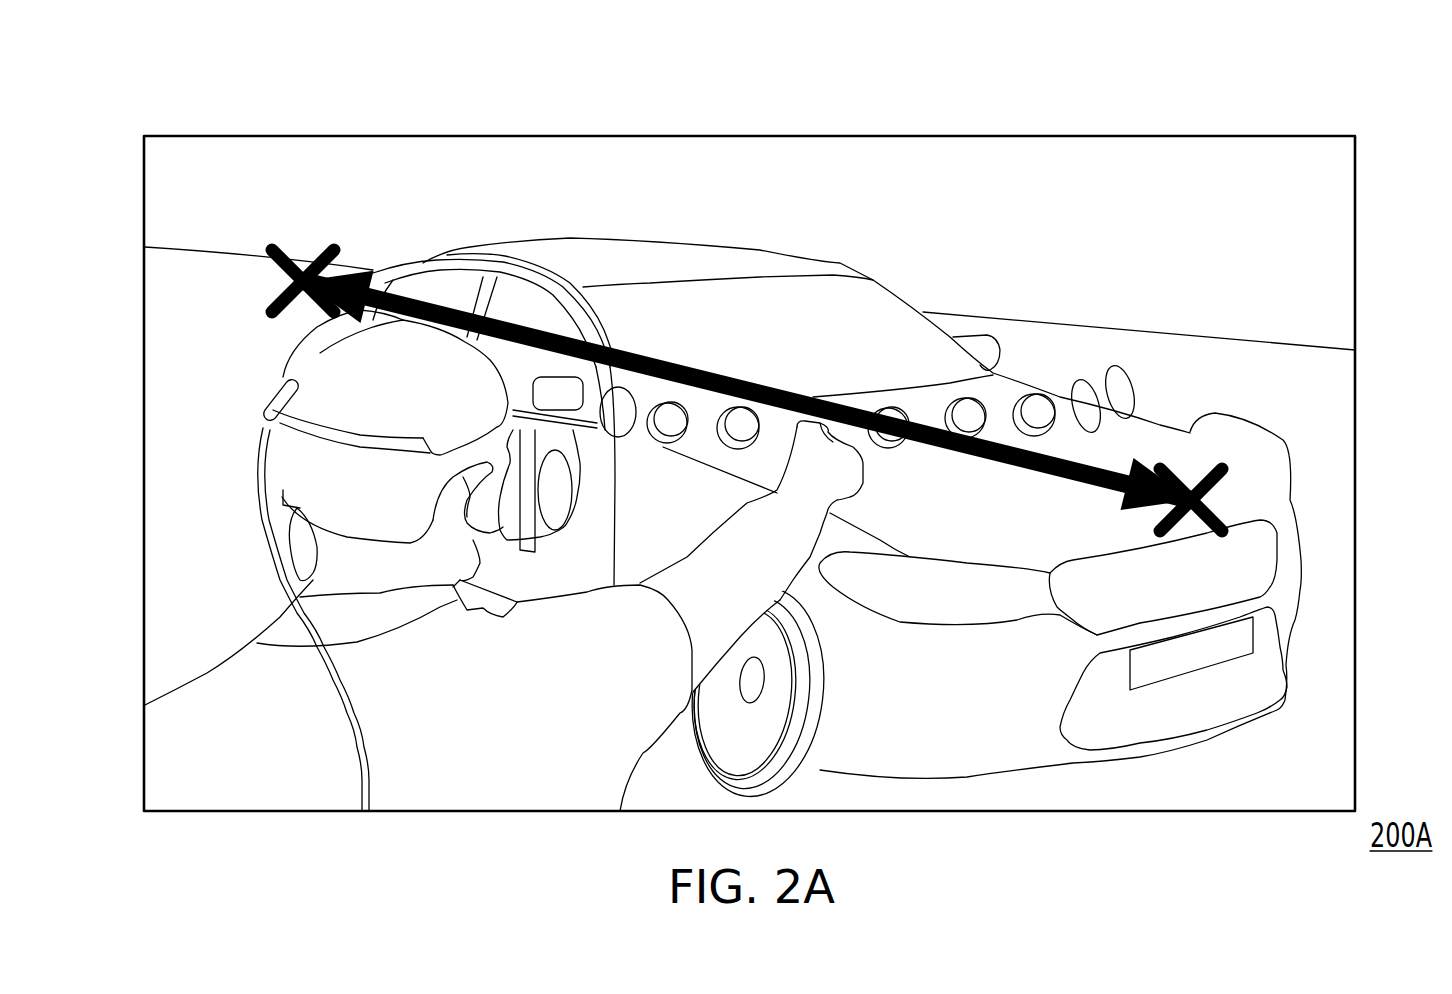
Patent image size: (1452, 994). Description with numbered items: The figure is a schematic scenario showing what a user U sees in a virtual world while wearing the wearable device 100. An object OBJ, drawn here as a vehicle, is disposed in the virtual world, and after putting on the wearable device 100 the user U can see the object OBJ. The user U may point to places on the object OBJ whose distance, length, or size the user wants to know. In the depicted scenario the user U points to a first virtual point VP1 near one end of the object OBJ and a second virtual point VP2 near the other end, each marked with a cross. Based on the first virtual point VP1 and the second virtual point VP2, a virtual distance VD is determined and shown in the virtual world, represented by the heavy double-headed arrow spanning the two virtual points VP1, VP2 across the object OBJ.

The wearable device 100 is at (263, 442).
The user U is at (173, 688).
The object OBJ is at (668, 240).
The virtual distance VD is at (763, 388).
The first virtual point VP1 is at (302, 250).
The second virtual point VP2 is at (1190, 480).